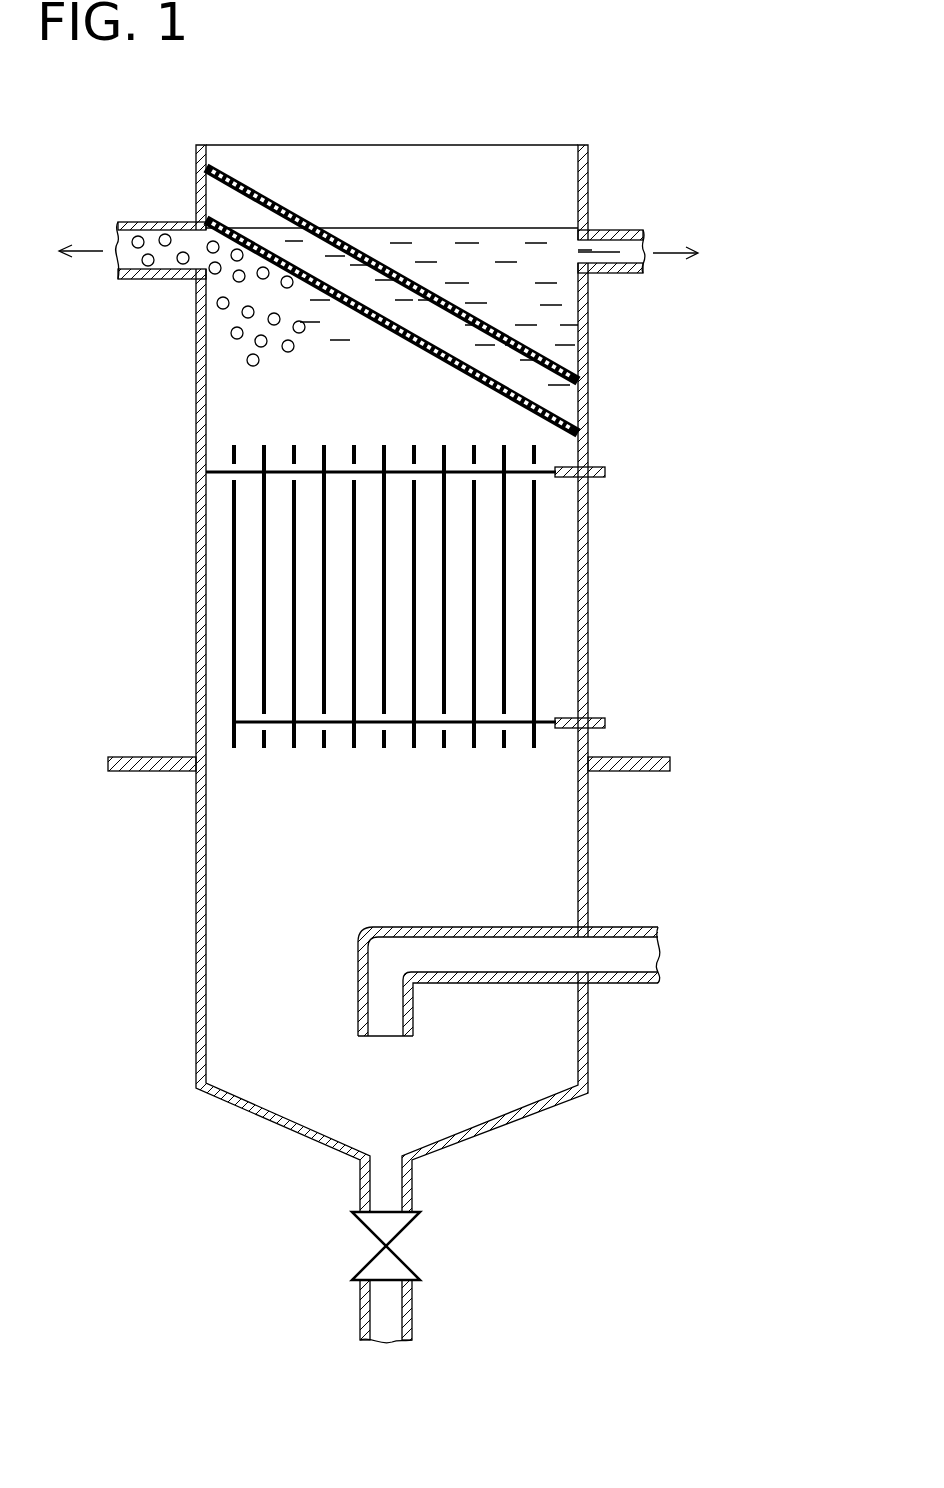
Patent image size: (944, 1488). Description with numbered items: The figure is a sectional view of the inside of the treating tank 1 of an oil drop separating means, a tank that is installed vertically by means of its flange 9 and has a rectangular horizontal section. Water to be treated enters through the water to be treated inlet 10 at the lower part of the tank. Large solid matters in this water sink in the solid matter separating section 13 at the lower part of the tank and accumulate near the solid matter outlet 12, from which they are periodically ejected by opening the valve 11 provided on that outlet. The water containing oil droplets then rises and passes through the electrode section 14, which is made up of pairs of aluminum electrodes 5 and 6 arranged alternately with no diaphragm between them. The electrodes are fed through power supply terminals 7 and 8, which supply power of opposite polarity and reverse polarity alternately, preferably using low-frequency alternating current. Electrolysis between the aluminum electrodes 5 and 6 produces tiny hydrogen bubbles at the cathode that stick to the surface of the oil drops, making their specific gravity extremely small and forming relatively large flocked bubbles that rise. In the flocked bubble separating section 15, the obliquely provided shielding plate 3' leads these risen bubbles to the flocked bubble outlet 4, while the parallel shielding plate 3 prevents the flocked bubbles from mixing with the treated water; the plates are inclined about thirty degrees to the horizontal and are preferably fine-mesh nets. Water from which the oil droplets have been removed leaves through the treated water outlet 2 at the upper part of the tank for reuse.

The treating tank 1 is at (590, 163).
The treated water outlet 2 is at (622, 250).
The shielding plate 3 is at (392, 234).
The shielding plate 3' is at (392, 260).
The flocked bubble outlet 4 is at (135, 263).
The aluminum electrode 5 is at (230, 683).
The aluminum electrode 6 is at (262, 478).
The power supply terminal 7 is at (606, 472).
The power supply terminal 8 is at (606, 722).
The flange 9 is at (107, 763).
The water to be treated inlet 10 is at (625, 948).
The valve 11 is at (400, 1262).
The solid matter outlet 12 is at (388, 1183).
The solid matter separating section 13 is at (268, 933).
The electrode section 14 is at (322, 587).
The flocked bubble separating section 15 is at (250, 373).